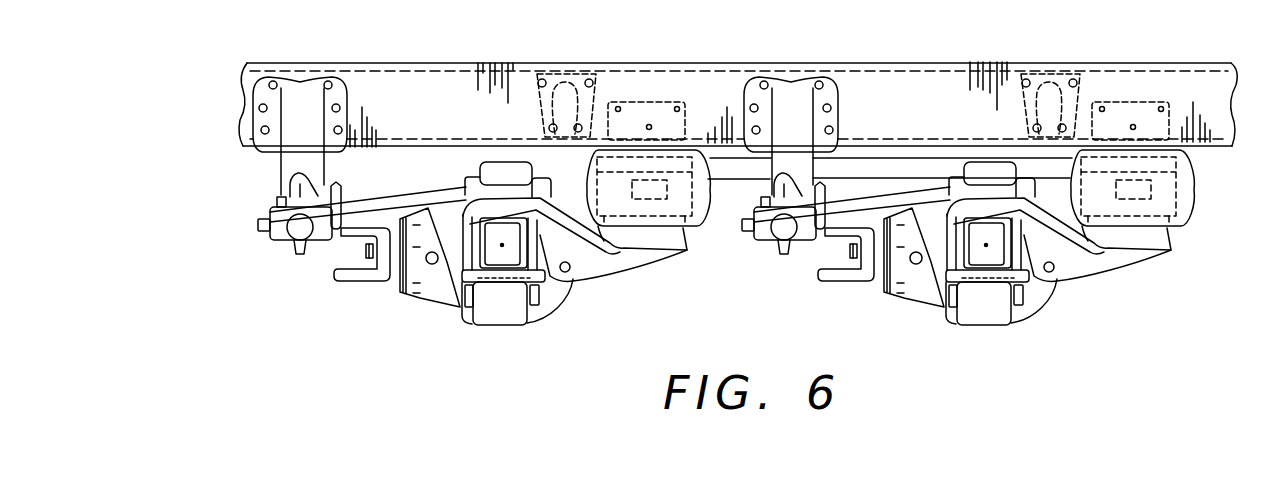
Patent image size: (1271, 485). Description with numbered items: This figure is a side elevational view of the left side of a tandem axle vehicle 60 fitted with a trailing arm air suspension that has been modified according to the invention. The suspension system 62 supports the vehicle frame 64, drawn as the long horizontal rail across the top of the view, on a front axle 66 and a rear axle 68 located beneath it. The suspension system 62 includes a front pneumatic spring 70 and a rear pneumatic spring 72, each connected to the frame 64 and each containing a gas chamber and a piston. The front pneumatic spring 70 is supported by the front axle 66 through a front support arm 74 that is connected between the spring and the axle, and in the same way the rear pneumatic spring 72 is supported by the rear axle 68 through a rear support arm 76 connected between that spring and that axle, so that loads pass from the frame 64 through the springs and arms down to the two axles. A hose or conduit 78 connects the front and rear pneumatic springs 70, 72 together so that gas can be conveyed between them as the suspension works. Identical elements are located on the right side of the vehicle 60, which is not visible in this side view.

The tandem axle vehicle 60 is at (270, 47).
The suspension system 62 is at (843, 252).
The vehicle frame 64 is at (425, 84).
The front axle 66 is at (490, 251).
The rear axle 68 is at (1024, 251).
The front pneumatic spring 70 is at (702, 208).
The rear pneumatic spring 72 is at (1165, 208).
The front support arm 74 is at (613, 260).
The rear support arm 76 is at (1066, 260).
The hose or conduit 78 is at (752, 173).